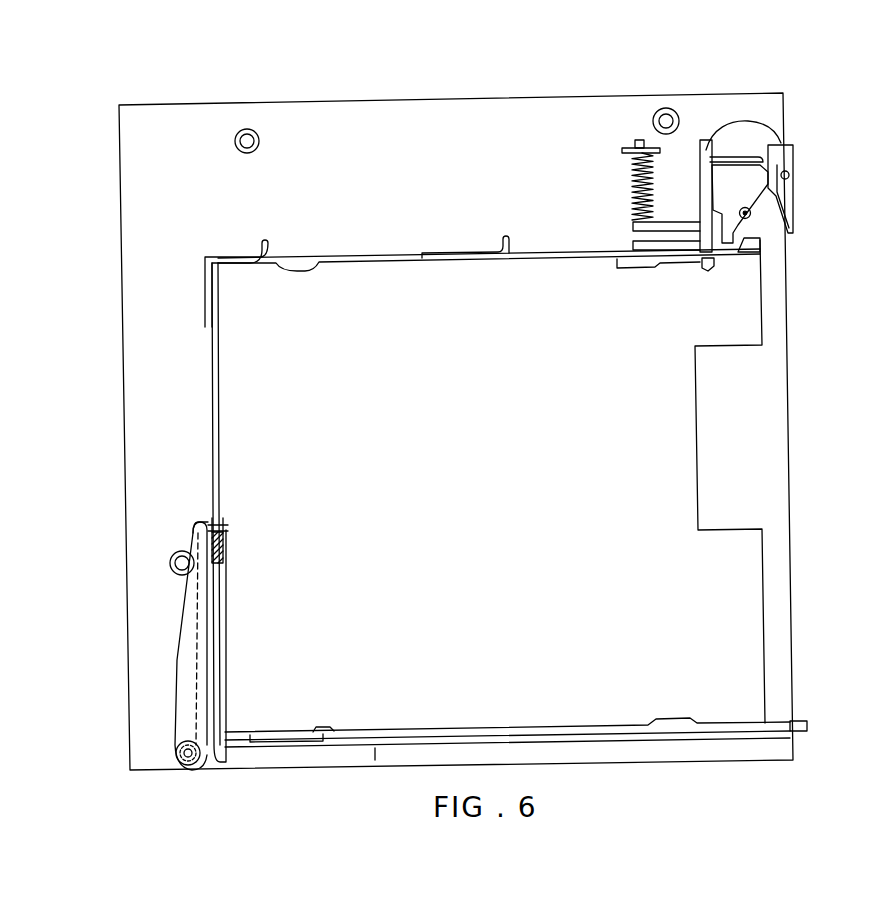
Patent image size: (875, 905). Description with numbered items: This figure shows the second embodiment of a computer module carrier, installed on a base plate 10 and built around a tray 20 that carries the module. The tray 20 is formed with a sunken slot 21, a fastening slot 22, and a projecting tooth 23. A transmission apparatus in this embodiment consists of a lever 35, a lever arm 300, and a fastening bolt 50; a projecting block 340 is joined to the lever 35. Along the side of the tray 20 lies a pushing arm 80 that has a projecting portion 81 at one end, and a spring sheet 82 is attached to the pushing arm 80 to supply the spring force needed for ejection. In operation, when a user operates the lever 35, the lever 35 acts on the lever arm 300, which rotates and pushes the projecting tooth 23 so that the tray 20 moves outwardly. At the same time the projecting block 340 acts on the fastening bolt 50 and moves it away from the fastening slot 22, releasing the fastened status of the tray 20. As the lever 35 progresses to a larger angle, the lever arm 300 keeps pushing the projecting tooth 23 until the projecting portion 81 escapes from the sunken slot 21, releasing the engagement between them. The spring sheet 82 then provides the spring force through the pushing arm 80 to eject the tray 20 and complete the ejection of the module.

The base plate 10 is at (193, 130).
The tray 20 is at (752, 638).
The sunken slot 21 is at (228, 529).
The fastening slot 22 is at (705, 276).
The projecting tooth 23 is at (748, 256).
The lever 35 is at (790, 200).
The fastening bolt 50 is at (664, 238).
The pushing arm 80 is at (187, 693).
The projecting portion 81 is at (203, 526).
The spring sheet 82 is at (210, 770).
The lever arm 300 is at (767, 226).
The projecting block 340 is at (762, 134).